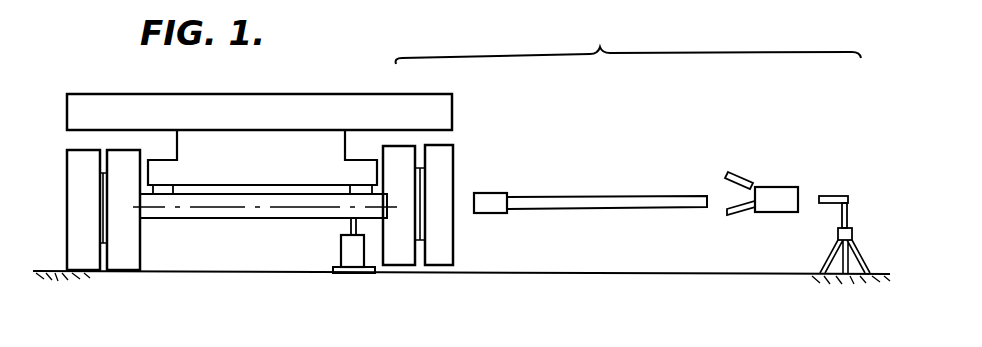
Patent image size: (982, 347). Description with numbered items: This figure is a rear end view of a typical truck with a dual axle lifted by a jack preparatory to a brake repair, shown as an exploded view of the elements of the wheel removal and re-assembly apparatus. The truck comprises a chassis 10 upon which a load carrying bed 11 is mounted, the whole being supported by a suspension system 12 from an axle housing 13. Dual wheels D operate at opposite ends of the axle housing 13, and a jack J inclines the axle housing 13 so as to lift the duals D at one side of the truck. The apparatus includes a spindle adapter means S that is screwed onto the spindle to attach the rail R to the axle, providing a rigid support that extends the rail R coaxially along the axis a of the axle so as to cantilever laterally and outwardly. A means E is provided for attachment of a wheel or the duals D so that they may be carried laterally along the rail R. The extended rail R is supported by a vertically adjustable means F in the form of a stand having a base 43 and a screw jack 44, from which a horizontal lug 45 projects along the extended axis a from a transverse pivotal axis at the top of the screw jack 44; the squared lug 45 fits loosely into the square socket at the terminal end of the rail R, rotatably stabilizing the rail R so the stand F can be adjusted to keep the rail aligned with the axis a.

The chassis 10 is at (262, 162).
The load carrying bed 11 is at (250, 104).
The suspension system 12 is at (158, 197).
The axle housing 13 is at (293, 203).
The axis a is at (243, 203).
The dual wheels D is at (462, 247).
The jack J is at (338, 275).
The spindle adapter means S is at (528, 158).
The rail R is at (608, 192).
The means for attachment of a wheel E is at (751, 170).
The vertically adjustable means F is at (824, 238).
The base 43 is at (826, 258).
The screw jack 44 is at (850, 216).
The horizontal lug 45 is at (836, 196).